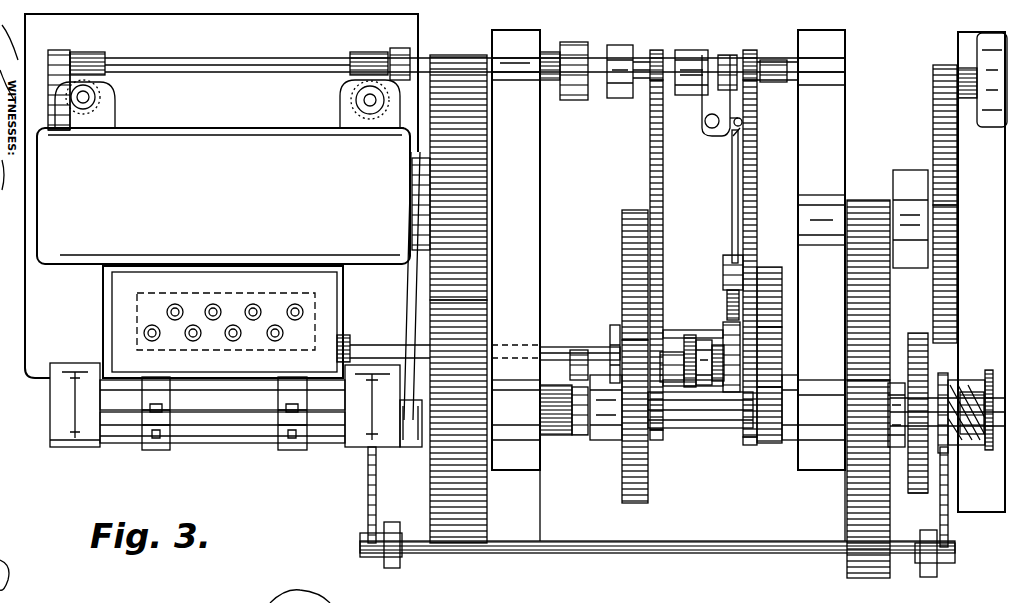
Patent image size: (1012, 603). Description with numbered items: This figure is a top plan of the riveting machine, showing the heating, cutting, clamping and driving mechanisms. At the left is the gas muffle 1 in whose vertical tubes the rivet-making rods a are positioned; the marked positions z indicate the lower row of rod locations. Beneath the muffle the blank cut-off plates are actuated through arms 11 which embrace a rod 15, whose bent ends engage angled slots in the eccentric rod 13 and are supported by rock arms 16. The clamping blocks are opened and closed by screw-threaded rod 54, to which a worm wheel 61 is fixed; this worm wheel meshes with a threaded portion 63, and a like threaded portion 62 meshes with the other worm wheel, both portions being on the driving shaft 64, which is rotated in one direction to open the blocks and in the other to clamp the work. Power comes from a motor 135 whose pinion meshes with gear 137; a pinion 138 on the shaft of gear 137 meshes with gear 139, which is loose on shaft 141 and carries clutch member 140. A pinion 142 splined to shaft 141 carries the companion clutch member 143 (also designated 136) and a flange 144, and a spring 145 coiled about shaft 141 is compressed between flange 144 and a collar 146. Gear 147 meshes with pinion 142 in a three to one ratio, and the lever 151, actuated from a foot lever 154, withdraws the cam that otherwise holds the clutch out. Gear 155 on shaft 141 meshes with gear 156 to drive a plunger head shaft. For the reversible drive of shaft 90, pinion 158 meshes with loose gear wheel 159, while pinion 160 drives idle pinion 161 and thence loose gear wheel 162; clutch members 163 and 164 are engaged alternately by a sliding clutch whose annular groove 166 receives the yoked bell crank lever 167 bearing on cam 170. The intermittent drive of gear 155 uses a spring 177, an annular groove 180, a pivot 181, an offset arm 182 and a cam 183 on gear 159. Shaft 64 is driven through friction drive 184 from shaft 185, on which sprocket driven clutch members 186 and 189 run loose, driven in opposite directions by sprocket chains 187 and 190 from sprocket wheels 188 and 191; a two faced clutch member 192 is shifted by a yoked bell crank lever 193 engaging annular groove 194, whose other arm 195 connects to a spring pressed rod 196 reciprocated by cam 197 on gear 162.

The gas muffle 1 is at (333, 302).
The round rods a is at (252, 306).
The lower row of keys z is at (232, 340).
The arms 11 is at (170, 448).
The eccentric rod 13 is at (412, 294).
The rod 15 is at (234, 440).
The rock arms 16 is at (387, 447).
The screw-threaded rod 54 is at (352, 104).
The worm wheel 61 is at (350, 86).
The threaded portion 62 is at (88, 52).
The threaded portion 63 is at (373, 55).
The driving shaft 64 is at (178, 58).
The driven shaft 90 is at (372, 343).
The motor 135 is at (1000, 128).
The clutch member 136 is at (930, 66).
The gear 137 is at (958, 197).
The pinion 138 is at (870, 200).
The gear 139 is at (847, 500).
The clutch member 140 is at (893, 385).
The shaft 141 is at (716, 425).
The pinion 142 is at (946, 378).
The clutch member 143 is at (896, 448).
The flange 144 is at (945, 478).
The spring 145 is at (972, 445).
The collar 146 is at (989, 370).
The gear 147 is at (930, 494).
The lever 151 is at (948, 525).
The foot lever 154 is at (366, 502).
The gear 155 is at (488, 506).
The gear 156 is at (488, 233).
The pinion 158 is at (648, 470).
The gear wheel 159 is at (622, 252).
The pinion 160 is at (770, 443).
The idle pinion 161 is at (782, 365).
The gear wheel 162 is at (770, 267).
The clutch member 163 is at (672, 340).
The clutch member 164 is at (720, 385).
The annular groove 166 is at (680, 345).
The yoked bell crank lever 167 is at (700, 395).
The cam 170 is at (734, 326).
The spring 177 is at (554, 440).
The annular groove 180 is at (595, 440).
The pivot 181 is at (572, 350).
The offset arm 182 is at (592, 352).
The cam 183 is at (615, 325).
The friction drive 184 is at (566, 100).
The shaft 185 is at (636, 42).
The sprocket driven clutch member 186 is at (660, 50).
The sprocket chain 187 is at (650, 145).
The sprocket wheel 188 is at (660, 440).
The sprocket driven clutch member 189 is at (748, 50).
The sprocket chain 190 is at (757, 126).
The sprocket wheel 191 is at (746, 440).
The two faced clutch member 192 is at (702, 96).
The yoked bell crank lever 193 is at (705, 125).
The annular groove 194 is at (708, 50).
The arm 195 is at (730, 140).
The rod 196 is at (732, 225).
The cam 197 is at (740, 320).